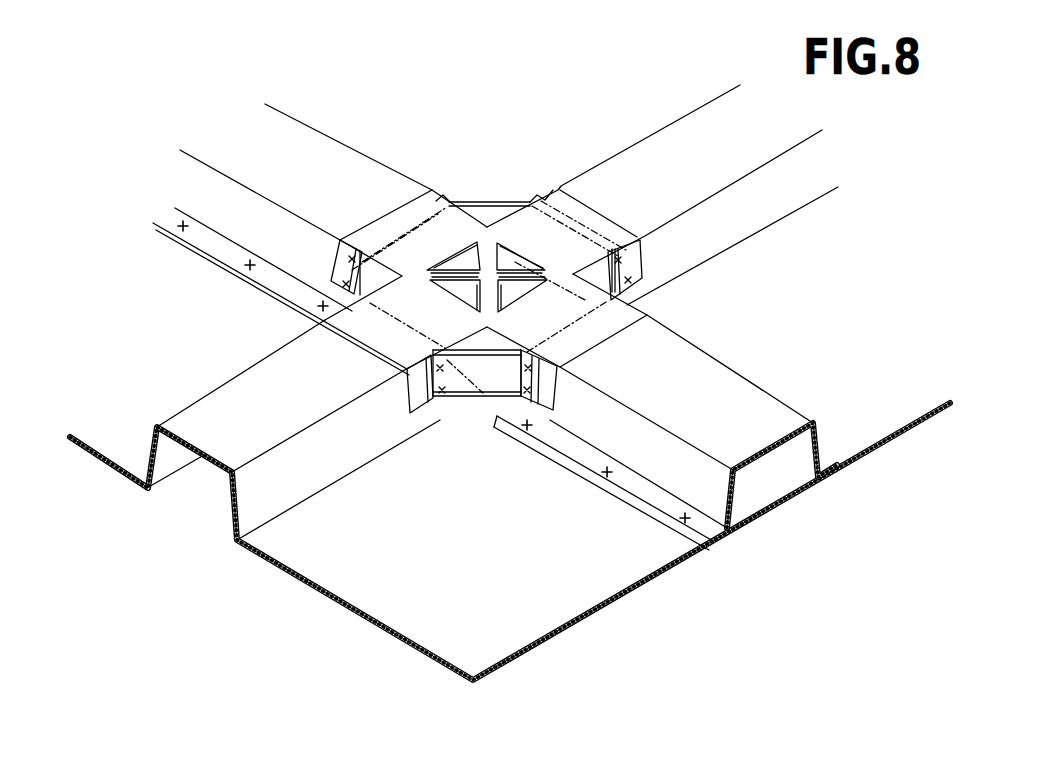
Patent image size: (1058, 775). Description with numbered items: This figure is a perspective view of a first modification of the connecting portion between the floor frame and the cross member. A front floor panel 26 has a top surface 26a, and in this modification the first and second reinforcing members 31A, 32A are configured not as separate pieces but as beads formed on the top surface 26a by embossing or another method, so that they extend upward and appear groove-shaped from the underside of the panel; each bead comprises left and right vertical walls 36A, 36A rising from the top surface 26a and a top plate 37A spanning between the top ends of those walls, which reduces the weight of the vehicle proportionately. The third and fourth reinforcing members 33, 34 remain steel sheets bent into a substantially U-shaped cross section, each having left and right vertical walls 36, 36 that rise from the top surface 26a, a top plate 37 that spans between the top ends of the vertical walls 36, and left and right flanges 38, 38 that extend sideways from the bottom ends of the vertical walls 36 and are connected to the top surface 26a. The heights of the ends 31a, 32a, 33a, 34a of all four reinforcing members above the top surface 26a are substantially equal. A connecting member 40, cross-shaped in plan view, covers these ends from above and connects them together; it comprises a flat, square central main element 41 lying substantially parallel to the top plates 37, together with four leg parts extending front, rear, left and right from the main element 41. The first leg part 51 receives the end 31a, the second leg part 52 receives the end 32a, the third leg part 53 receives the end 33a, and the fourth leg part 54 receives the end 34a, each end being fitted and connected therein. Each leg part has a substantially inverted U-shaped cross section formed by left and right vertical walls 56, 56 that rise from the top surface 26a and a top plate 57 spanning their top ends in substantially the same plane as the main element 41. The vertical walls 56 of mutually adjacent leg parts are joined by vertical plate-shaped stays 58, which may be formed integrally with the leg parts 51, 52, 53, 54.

The front floor panel 26 is at (392, 607).
The top surface of the front floor panel 26a is at (465, 621).
The first reinforcing member 31A is at (288, 495).
The end of the first reinforcing member 31a is at (368, 378).
The second reinforcing member 32A is at (692, 104).
The end of the second reinforcing member 32a is at (610, 203).
The third reinforcing member 33 is at (289, 113).
The end of the third reinforcing member 33a is at (343, 196).
The fourth reinforcing member 34 is at (797, 406).
The end of the fourth reinforcing member 34a is at (612, 352).
The vertical wall 36 is at (203, 188).
The top plate 37 is at (240, 150).
The flange 38 is at (165, 233).
The vertical wall 36A is at (150, 478).
The top plate 37A is at (200, 473).
The connecting member 40 is at (452, 186).
The main element 41 is at (487, 226).
The first leg part 51 is at (363, 340).
The second leg part 52 is at (575, 210).
The third leg part 53 is at (389, 212).
The fourth leg part 54 is at (580, 350).
The vertical wall of the leg part 56 is at (401, 415).
The top plate of the leg part 57 is at (373, 350).
The stay 58 is at (463, 392).